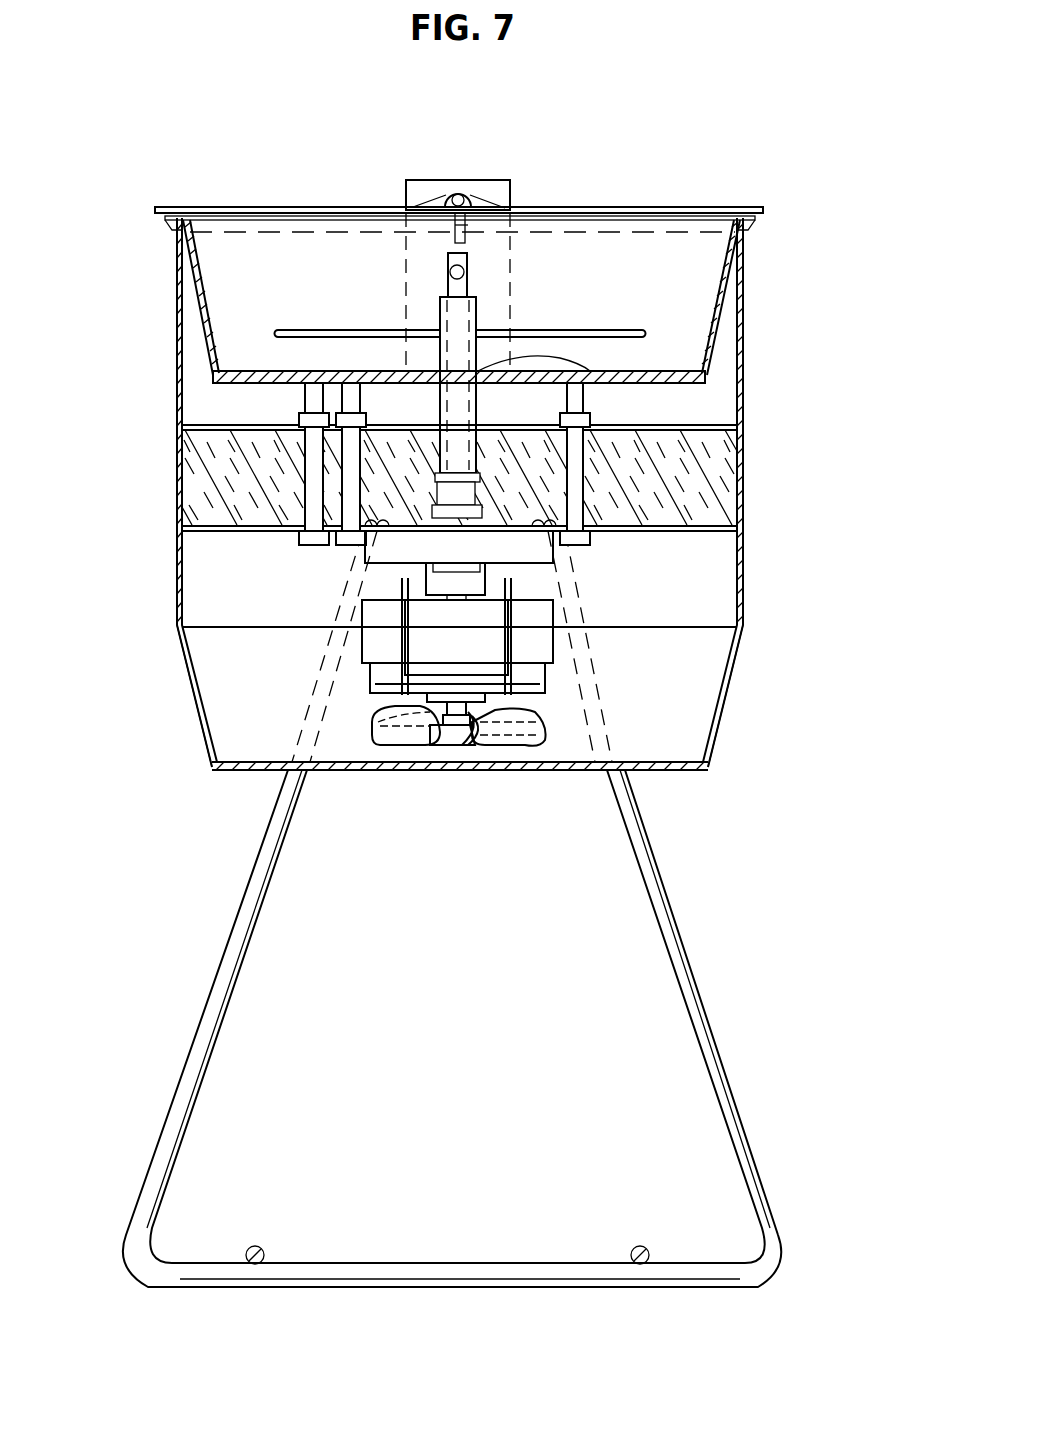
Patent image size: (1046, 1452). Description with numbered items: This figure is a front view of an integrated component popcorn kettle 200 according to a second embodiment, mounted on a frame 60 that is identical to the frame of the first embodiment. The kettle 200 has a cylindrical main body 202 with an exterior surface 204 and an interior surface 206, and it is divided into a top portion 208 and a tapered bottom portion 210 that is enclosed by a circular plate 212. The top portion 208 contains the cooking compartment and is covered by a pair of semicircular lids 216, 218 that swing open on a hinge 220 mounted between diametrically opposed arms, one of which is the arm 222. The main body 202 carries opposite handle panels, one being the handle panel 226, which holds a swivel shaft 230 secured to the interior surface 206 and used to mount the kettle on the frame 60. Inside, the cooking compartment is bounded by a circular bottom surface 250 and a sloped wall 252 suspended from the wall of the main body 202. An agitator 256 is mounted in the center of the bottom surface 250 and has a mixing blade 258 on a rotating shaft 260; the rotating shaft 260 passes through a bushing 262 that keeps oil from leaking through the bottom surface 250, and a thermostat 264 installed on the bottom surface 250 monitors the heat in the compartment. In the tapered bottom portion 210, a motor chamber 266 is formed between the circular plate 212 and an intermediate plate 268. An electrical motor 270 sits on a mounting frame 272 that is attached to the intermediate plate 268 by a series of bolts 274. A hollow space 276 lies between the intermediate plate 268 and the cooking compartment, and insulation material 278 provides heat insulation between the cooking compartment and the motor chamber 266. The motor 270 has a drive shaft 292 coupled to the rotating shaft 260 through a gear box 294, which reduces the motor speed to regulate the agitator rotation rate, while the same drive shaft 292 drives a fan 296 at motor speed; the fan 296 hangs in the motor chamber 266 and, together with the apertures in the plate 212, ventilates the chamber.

The frame 60 is at (705, 985).
The popcorn kettle 200 is at (160, 183).
The main body 202 is at (748, 325).
The exterior surface 204 is at (717, 465).
The interior surface 206 is at (708, 394).
The top portion 208 is at (748, 190).
The tapered bottom portion 210 is at (748, 660).
The circular plate 212 is at (394, 772).
The semicircular lid 216 is at (236, 208).
The semicircular lid 218 is at (612, 208).
The hinge 220 is at (480, 200).
The arm 222 is at (460, 190).
The handle panel 226 is at (448, 270).
The swivel shaft 230 is at (440, 300).
The bottom surface 250 is at (222, 386).
The sloped wall 252 is at (200, 292).
The agitator 256 is at (478, 307).
The mixing blade 258 is at (645, 322).
The rotating shaft 260 is at (463, 328).
The bushing 262 is at (605, 383).
The thermostat 264 is at (303, 392).
The motor chamber 266 is at (715, 555).
The intermediate plate 268 is at (218, 532).
The electrical motor 270 is at (360, 627).
The mounting frame 272 is at (383, 580).
The bolts 274 is at (366, 548).
The hollow space 276 is at (207, 481).
The insulation material 278 is at (194, 444).
The drive shaft 292 is at (556, 553).
The gear box 294 is at (455, 655).
The fan 296 is at (413, 733).